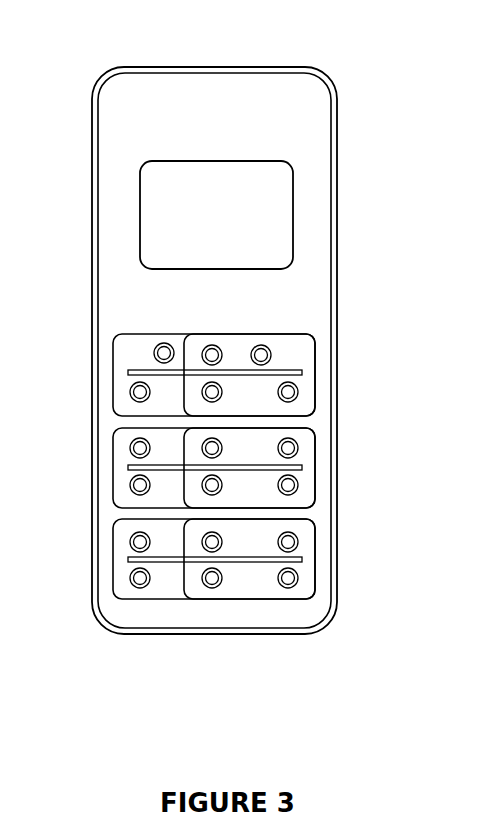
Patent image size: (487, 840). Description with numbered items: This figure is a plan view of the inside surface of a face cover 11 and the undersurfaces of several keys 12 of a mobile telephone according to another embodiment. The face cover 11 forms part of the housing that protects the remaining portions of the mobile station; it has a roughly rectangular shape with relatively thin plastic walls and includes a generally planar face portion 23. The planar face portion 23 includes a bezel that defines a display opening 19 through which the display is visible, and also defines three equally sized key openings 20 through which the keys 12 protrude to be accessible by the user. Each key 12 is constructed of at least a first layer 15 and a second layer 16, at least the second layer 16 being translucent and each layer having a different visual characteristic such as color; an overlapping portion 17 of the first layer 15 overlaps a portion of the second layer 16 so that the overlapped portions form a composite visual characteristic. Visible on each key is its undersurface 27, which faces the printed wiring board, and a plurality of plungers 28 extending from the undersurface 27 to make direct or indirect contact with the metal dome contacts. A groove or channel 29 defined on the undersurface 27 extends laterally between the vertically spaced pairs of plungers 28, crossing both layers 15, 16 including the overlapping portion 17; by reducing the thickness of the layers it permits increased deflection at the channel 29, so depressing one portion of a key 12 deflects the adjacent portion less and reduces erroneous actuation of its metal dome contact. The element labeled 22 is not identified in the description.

The face cover 11 is at (353, 70).
The keys 12 is at (298, 357).
The first layer 15 is at (273, 342).
The second layer 16 is at (197, 342).
The overlapping portion of the first layer 17 is at (142, 342).
The display opening 19 is at (293, 242).
The key openings 20 is at (315, 397).
The housing 22 is at (331, 194).
The planar face portion 23 is at (282, 134).
The undersurface of the key 27 is at (132, 361).
The plungers 28 is at (212, 355).
The channel 29 is at (128, 372).